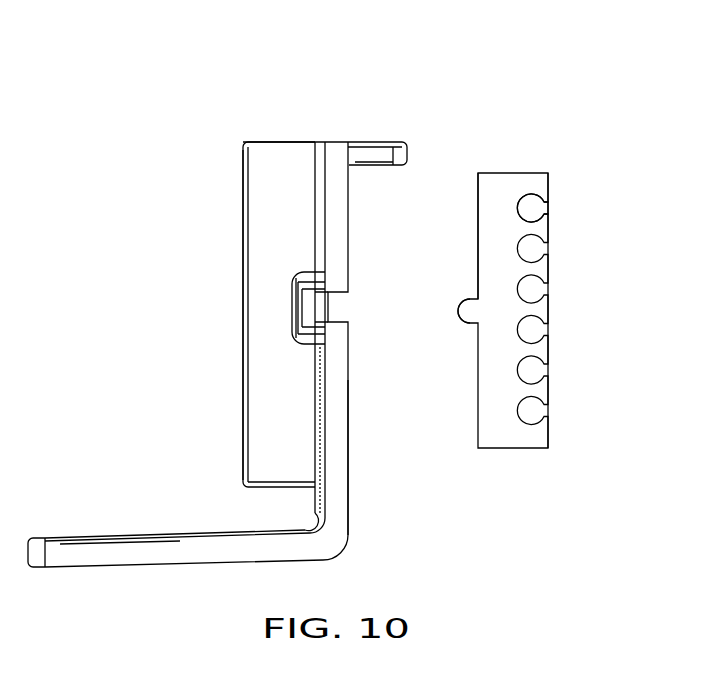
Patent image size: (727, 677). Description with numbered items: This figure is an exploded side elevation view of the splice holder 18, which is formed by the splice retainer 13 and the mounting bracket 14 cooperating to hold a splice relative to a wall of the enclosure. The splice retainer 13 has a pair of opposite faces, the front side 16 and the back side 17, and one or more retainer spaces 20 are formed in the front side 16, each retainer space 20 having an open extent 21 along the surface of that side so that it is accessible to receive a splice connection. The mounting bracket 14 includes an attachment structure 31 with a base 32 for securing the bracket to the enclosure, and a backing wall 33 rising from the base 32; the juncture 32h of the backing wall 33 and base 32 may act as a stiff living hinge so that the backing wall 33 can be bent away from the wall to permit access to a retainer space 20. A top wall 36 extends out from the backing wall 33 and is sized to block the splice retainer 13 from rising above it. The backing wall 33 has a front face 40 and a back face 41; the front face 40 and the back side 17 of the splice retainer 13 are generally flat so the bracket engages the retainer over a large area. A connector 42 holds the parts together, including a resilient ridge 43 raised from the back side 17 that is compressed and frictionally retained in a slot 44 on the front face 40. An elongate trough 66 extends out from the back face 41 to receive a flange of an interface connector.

The splice holder 18 is at (382, 90).
The mounting bracket 14 is at (338, 142).
The top wall 36 is at (382, 142).
The splice retainer 13 is at (530, 173).
The front side 16 is at (548, 185).
The back side 17 is at (478, 195).
The retainer space 20 is at (540, 205).
The open extent 21 is at (542, 213).
The back face 41 is at (315, 200).
The front face 40 is at (350, 222).
The elongate trough 66 is at (243, 295).
The connector 42 is at (399, 273).
The slot 44 is at (330, 304).
The ridge 43 is at (462, 325).
The backing wall 33 is at (350, 432).
The attachment structure 31 is at (182, 510).
The juncture 32h is at (338, 542).
The base 32 is at (148, 566).